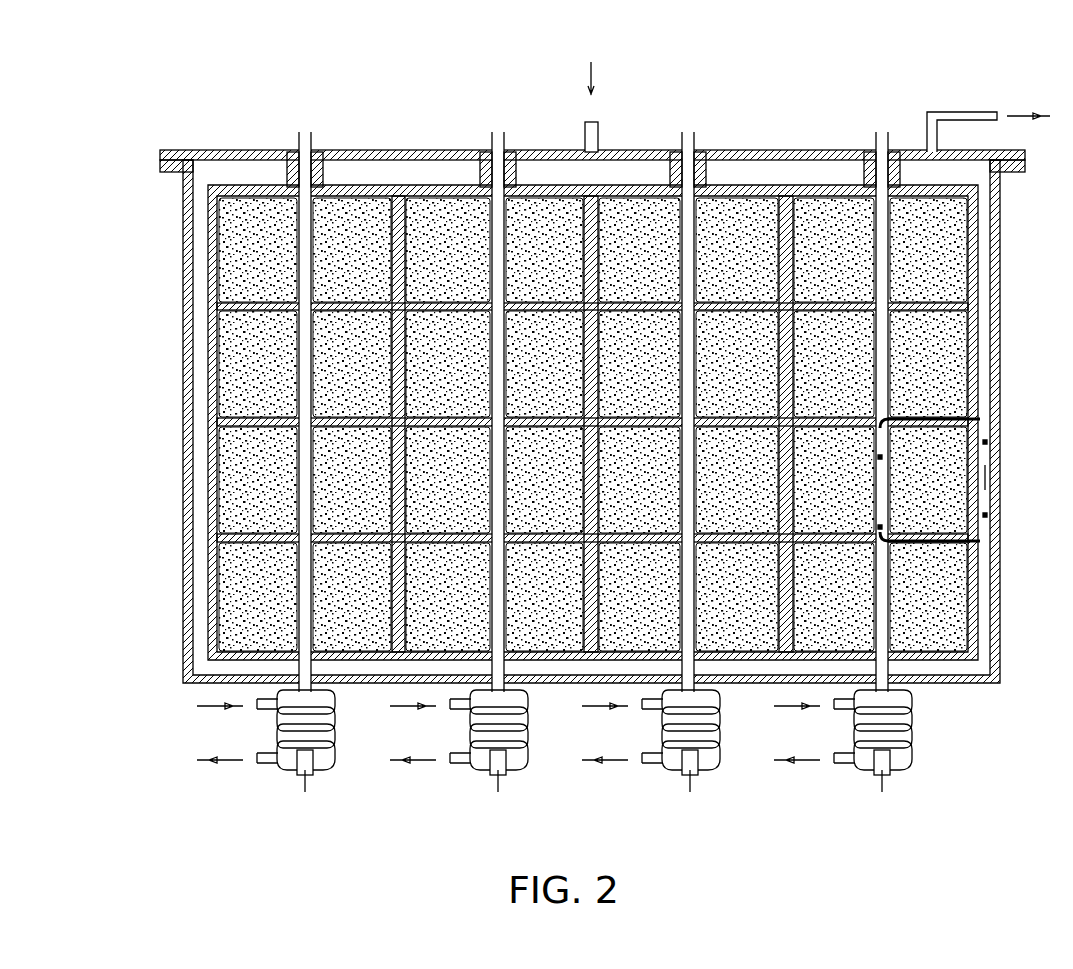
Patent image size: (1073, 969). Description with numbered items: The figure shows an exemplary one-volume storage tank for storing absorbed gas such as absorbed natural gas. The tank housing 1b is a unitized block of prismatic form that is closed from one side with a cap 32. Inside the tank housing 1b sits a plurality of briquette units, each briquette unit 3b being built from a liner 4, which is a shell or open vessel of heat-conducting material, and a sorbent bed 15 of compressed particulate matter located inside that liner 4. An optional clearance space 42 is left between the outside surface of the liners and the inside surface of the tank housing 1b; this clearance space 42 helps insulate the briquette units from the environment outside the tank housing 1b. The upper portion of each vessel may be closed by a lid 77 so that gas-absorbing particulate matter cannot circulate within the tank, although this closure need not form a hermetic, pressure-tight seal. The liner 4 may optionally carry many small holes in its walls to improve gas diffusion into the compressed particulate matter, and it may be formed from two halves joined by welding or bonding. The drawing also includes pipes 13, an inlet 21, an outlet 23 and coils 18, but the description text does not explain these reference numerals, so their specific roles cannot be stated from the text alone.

The tank housing 1b is at (192, 580).
The clearance space 42 is at (200, 178).
The cap 32 is at (795, 150).
The heat exchange pipe 13 is at (328, 153).
The lid 77 is at (330, 197).
The liner 4 is at (228, 283).
The sorbent bed 15 is at (592, 424).
The inlet pipe 21 is at (600, 128).
The outlet pipe 23 is at (935, 115).
The heat exchange coil 18 is at (332, 758).
The briquette unit 3b is at (985, 495).